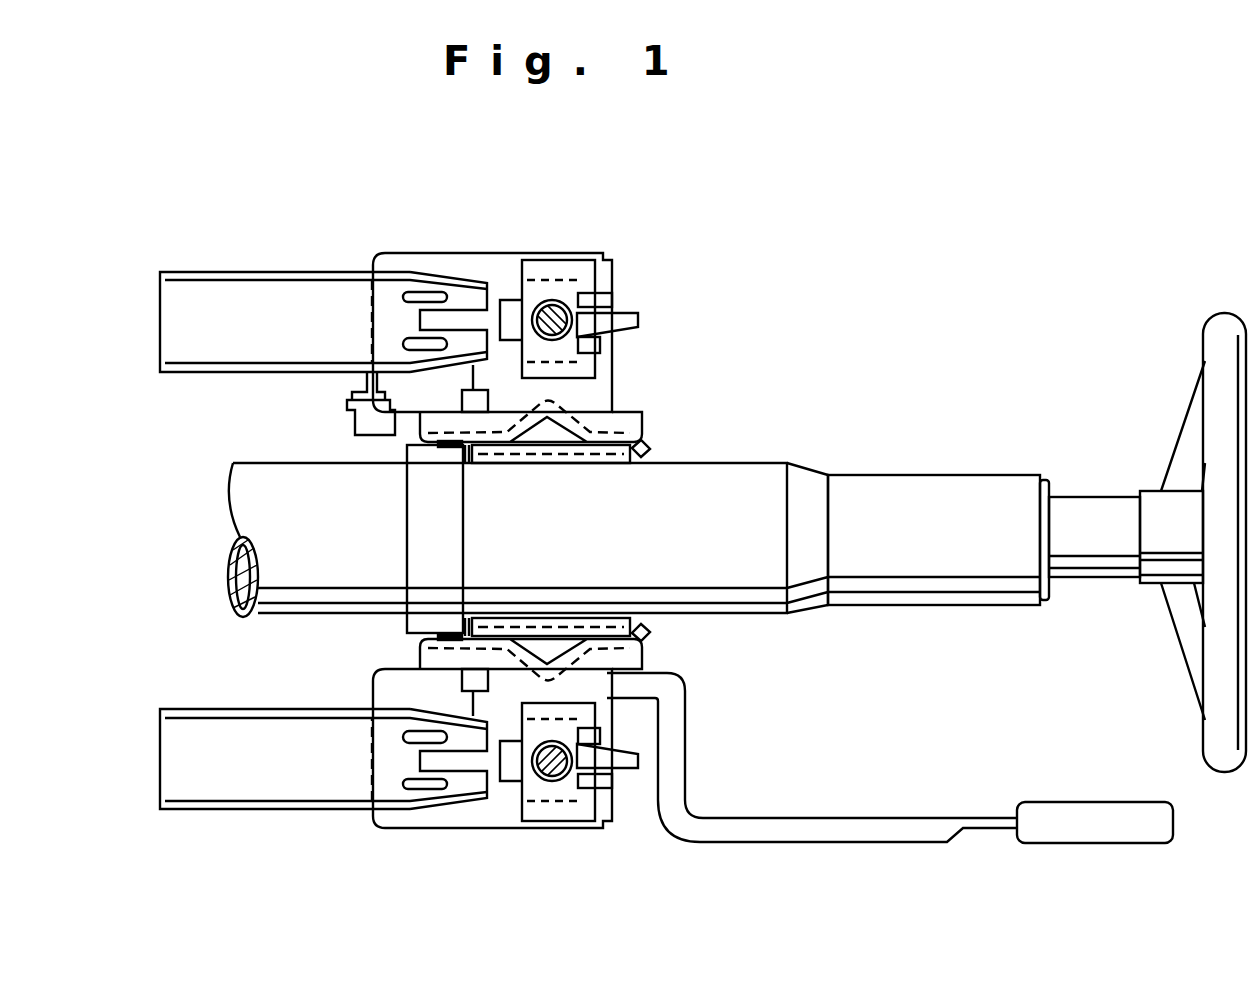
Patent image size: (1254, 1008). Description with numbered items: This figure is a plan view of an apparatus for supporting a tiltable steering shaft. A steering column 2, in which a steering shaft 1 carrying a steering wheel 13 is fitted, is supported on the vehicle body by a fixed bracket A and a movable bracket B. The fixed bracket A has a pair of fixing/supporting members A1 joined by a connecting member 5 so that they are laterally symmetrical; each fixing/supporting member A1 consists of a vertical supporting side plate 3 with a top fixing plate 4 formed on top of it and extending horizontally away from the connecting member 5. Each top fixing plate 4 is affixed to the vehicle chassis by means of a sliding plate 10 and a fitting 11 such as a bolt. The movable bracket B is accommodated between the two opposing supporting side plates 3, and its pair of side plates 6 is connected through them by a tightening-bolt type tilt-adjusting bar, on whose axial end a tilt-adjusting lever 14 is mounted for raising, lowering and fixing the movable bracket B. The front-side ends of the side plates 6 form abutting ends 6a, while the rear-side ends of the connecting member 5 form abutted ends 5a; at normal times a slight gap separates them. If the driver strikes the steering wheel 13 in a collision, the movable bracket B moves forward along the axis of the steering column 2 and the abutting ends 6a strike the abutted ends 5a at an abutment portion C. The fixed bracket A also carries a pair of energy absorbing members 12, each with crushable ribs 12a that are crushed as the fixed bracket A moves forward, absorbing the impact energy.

The steering shaft 1 is at (1075, 495).
The steering column 2 is at (921, 473).
The supporting side plate 3 is at (618, 426).
The top fixing plate 4 is at (494, 272).
The connecting member 5 is at (388, 503).
The abutted end 5a is at (455, 452).
The side plate 6 is at (548, 468).
The abutting end 6a is at (478, 466).
The sliding plate 10 is at (558, 259).
The fitting 11 is at (574, 322).
The energy absorbing member 12 is at (262, 268).
The crushable rib 12a is at (200, 376).
The steering wheel 13 is at (1226, 350).
The tilt-adjusting lever 14 is at (848, 825).
The fixed bracket A is at (444, 248).
The fixing/supporting member A1 is at (591, 243).
The movable bracket B is at (586, 468).
The abutment portion C is at (462, 490).